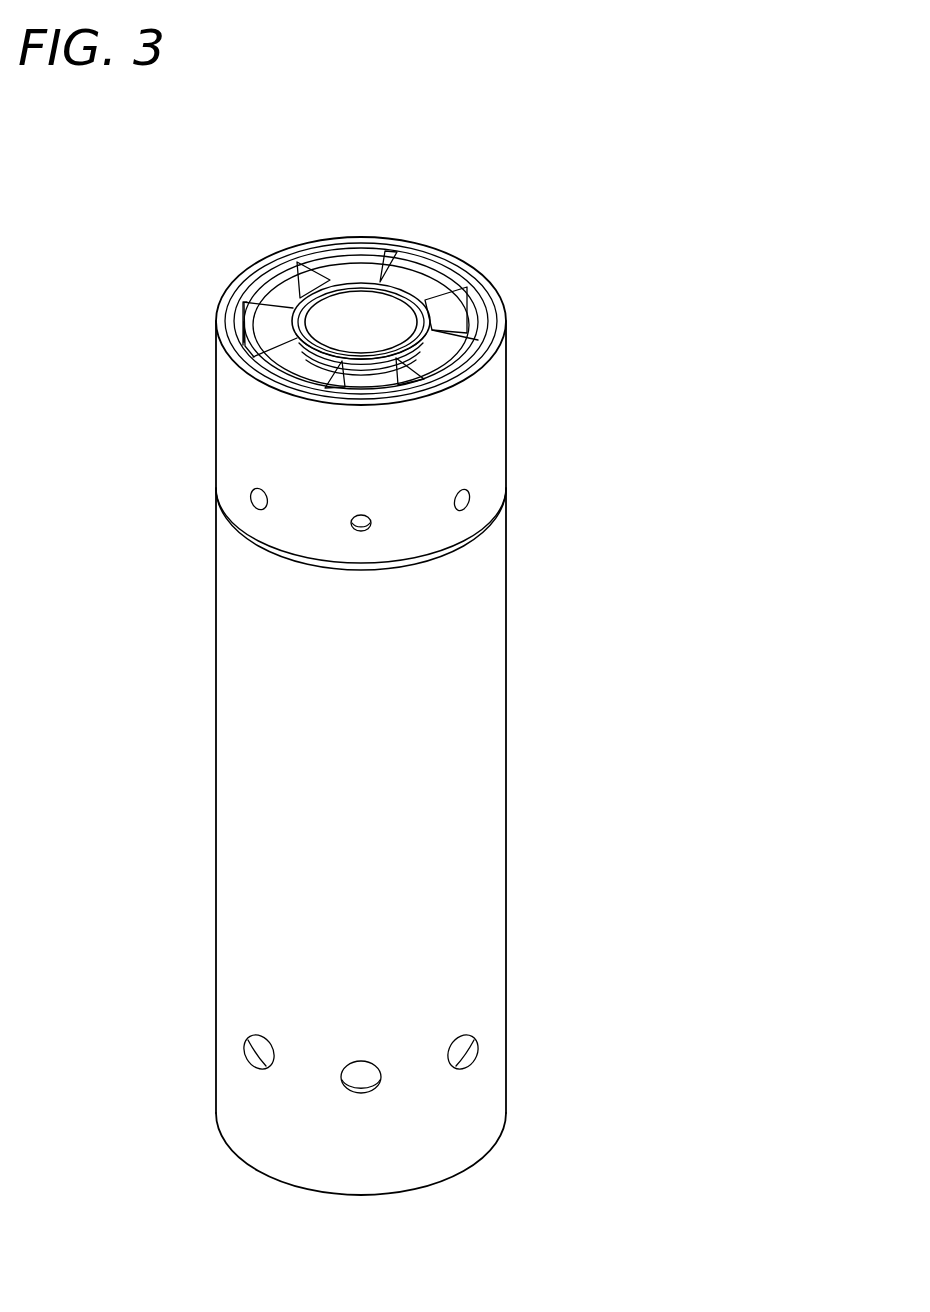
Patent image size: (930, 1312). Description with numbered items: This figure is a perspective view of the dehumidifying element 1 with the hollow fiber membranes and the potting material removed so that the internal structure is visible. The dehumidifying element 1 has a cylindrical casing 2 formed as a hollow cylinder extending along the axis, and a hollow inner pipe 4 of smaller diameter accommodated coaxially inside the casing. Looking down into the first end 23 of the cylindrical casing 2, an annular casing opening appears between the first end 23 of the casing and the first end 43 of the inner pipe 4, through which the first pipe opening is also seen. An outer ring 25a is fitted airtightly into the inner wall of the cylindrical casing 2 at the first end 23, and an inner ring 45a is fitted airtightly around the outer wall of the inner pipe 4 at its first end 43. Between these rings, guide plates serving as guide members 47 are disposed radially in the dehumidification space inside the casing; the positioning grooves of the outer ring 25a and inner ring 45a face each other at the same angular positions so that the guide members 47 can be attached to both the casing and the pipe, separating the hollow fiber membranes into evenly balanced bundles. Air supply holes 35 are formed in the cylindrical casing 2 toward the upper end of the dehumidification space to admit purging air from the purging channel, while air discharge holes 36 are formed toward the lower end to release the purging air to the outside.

The dehumidifying element 1 is at (550, 203).
The cylindrical casing 2 is at (440, 713).
The hollow inner pipe 4 is at (360, 310).
The first end 23 is at (420, 248).
The outer ring 25a is at (238, 322).
The air supply holes 35 is at (468, 502).
The air discharge holes 36 is at (455, 1050).
The first end 43 is at (420, 318).
The inner ring 45a is at (295, 305).
The guide members 47 is at (448, 345).